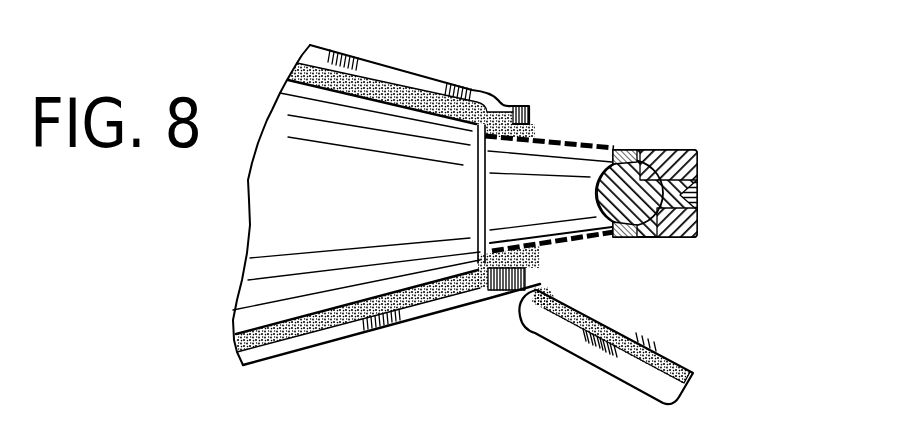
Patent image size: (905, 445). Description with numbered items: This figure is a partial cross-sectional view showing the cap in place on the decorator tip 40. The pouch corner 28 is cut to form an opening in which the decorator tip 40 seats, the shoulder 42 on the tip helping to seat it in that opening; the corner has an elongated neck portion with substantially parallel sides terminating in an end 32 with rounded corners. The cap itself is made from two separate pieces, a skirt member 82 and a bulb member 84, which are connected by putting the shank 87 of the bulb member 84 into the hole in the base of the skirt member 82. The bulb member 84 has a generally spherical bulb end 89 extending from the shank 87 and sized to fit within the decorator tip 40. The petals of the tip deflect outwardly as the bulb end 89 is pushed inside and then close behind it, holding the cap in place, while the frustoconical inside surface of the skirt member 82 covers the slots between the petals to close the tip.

The corner 28 is at (413, 132).
The decorator tip 40 is at (558, 135).
The shoulder 42 is at (479, 188).
The skirt member 82 is at (647, 152).
The bulb member 84 is at (611, 158).
The shank 87 is at (698, 188).
The bulb end 89 is at (605, 240).
The end 32 is at (613, 375).